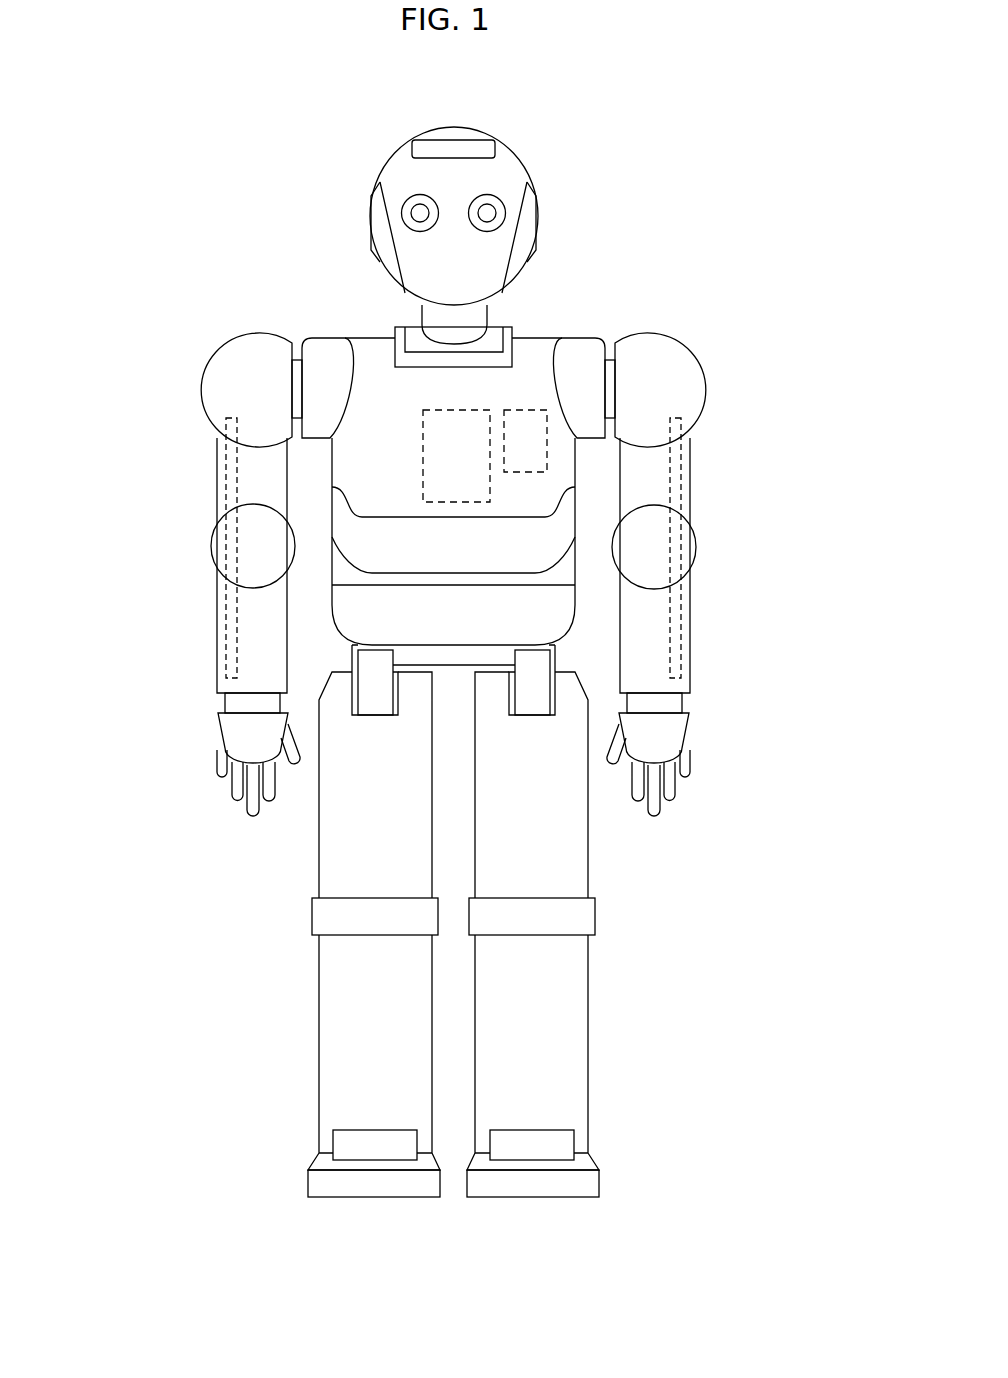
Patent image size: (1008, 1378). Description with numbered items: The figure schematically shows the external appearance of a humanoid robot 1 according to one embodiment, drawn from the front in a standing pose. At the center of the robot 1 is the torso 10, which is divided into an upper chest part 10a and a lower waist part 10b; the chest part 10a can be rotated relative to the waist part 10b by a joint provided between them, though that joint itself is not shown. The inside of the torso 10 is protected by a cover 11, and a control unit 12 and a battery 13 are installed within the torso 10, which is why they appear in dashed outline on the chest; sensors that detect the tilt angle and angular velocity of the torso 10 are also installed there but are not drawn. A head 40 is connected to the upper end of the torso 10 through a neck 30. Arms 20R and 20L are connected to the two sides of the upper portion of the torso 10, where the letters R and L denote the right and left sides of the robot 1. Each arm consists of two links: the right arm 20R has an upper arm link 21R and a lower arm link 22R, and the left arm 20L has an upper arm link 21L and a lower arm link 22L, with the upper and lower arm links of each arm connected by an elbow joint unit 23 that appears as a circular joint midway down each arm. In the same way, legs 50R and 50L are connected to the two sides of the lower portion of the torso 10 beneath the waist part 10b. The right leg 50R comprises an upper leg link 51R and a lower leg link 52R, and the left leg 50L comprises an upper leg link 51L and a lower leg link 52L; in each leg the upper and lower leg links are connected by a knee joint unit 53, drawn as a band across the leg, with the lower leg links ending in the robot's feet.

The humanoid robot 1 is at (727, 170).
The torso 10 is at (412, 499).
The chest part 10a is at (438, 481).
The waist part 10b is at (323, 632).
The cover 11 is at (568, 518).
The control unit 12 is at (472, 412).
The battery 13 is at (543, 410).
The right arm 20R is at (175, 574).
The right upper arm link 21R is at (217, 500).
The right lower arm link 22R is at (217, 610).
The left arm 20L is at (724, 574).
The left upper arm link 21L is at (688, 500).
The left lower arm link 22L is at (688, 610).
The elbow joint unit 23 is at (257, 505).
The neck 30 is at (507, 310).
The head 40 is at (542, 142).
The right leg 50R is at (298, 934).
The right upper leg link 51R is at (333, 883).
The right lower leg link 52R is at (328, 957).
The left leg 50L is at (603, 934).
The left upper leg link 51L is at (577, 885).
The left lower leg link 52L is at (572, 957).
The knee joint unit 53 is at (373, 936).